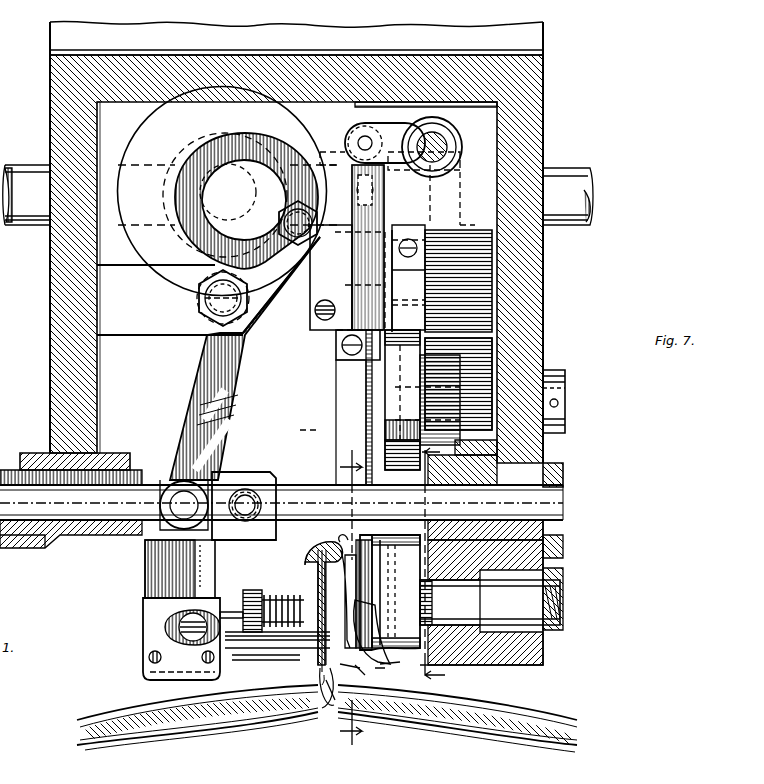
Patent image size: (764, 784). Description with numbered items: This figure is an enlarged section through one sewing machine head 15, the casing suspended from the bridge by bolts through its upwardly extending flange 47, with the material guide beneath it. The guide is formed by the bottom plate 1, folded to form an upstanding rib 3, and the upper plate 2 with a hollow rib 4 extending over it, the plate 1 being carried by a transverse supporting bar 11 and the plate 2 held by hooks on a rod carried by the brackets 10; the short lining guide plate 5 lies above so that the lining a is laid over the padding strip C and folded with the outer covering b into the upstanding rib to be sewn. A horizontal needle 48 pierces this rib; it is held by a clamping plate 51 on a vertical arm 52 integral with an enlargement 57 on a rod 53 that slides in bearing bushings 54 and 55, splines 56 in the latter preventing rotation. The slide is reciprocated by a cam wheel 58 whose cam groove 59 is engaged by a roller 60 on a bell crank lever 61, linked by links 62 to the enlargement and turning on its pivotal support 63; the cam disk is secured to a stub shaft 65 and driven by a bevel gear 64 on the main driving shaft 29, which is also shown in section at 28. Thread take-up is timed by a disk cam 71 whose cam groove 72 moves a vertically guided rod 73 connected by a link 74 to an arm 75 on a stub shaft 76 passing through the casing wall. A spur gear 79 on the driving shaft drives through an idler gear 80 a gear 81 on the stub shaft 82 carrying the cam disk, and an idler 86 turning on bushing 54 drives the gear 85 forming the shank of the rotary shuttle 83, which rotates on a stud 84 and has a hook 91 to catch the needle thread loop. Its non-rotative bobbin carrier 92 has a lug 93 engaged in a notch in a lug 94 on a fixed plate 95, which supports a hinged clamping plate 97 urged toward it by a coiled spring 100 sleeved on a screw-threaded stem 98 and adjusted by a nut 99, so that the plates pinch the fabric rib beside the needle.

The bottom guide plate 1 is at (140, 748).
The upper guide plate 2 is at (90, 720).
The upstanding rib 3 is at (333, 720).
The hollow rib 4 is at (350, 673).
The lining guide plate 5 is at (118, 685).
The bracket 10 is at (351, 596).
The transverse supporting bar 11 is at (443, 563).
The sewing machine head 15 is at (530, 133).
The shaft (left) 28 is at (26, 195).
The main driving shaft 29 is at (566, 185).
The upwardly extending flange 47 is at (283, 35).
The needle 48 is at (285, 702).
The clamping plate 51 is at (148, 627).
The vertical arm 52 is at (150, 582).
The rod 53 is at (548, 502).
The bearing bushing 54 is at (560, 482).
The bearing bushing 55 is at (30, 450).
The spline 56 is at (5, 572).
The enlargement 57 is at (262, 472).
The cam wheel 58 is at (229, 191).
The cam groove 59 is at (196, 160).
The roller 60 is at (268, 296).
The bell crank lever 61 is at (197, 358).
The link 62 is at (225, 472).
The pivotal support 63 is at (240, 325).
The bevel gear 64 is at (196, 140).
The stub shaft 65 is at (228, 192).
The disk cam 71 is at (388, 396).
The cam groove 72 is at (385, 425).
The vertically guided rod 73 is at (370, 205).
The link 74 is at (384, 172).
The arm 75 is at (380, 125).
The stub shaft 76 is at (445, 147).
The spur gear 79 is at (462, 198).
The idler gear 80 is at (492, 262).
The gear 81 is at (470, 372).
The stub shaft 82 is at (440, 396).
The rotary shuttle 83 is at (380, 592).
The stud 84 is at (490, 602).
The gear 85 is at (462, 628).
The idler 86 is at (500, 453).
The hook 91 is at (398, 663).
The bobbin carrier 92 is at (372, 632).
The lug 93 is at (358, 617).
The lug 94 is at (298, 640).
The plate 95 is at (320, 572).
The clamping plate 97 is at (300, 585).
The screw-threaded stem 98 is at (240, 625).
The nut 99 is at (250, 650).
The coiled spring 100 is at (318, 705).
The lining a is at (95, 694).
The outer fabric covering b is at (110, 735).
The padding strip C is at (95, 706).